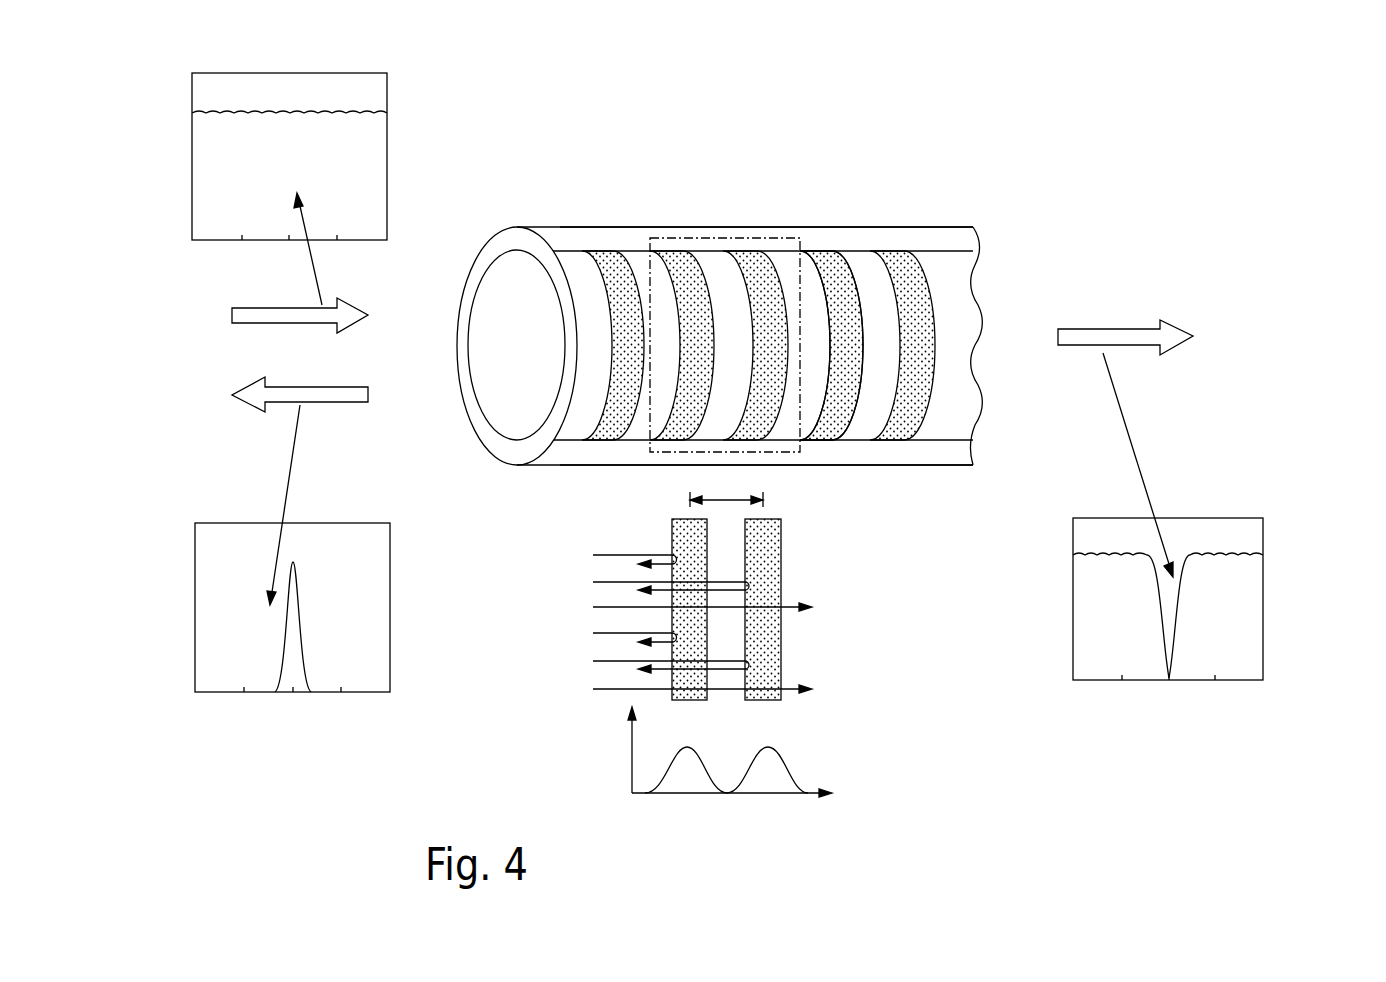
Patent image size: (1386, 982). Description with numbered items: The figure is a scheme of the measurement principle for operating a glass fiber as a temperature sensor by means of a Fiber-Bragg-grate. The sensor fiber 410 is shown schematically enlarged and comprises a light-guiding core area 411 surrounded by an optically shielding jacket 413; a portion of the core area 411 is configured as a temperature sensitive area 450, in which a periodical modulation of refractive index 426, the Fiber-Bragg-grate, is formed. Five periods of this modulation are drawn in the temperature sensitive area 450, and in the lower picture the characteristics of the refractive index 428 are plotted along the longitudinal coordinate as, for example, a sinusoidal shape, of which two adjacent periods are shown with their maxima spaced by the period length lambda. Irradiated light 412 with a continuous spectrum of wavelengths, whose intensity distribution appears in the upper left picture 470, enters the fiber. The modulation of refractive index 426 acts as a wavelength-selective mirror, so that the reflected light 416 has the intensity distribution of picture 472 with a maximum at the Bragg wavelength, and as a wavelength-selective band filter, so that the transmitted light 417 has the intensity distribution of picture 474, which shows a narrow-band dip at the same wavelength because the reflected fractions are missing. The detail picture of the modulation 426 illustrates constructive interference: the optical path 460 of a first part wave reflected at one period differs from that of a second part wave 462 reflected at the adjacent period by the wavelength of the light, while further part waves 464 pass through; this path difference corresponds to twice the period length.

The sensor fiber 410 is at (620, 150).
The light-guiding core area 411 is at (857, 275).
The optically shielding jacket 413 is at (957, 233).
The modulation of refractive index 426 is at (822, 563).
The temperature sensitive area 450 is at (885, 211).
The characteristics of the refractive index 428 is at (834, 762).
The irradiated light 412 is at (251, 318).
The reflected light 416 is at (251, 395).
The transmitted light 417 is at (1169, 336).
The optical path of first part wave 460 is at (593, 555).
The light ray reflected at second grating plane 462 is at (593, 582).
The transmitted light ray 464 is at (593, 607).
The picture of intensity distribution of in-coupled light 470 is at (414, 104).
The picture of intensity distribution of reflected light 472 is at (405, 541).
The picture of intensity distribution of transmitted light 474 is at (1288, 605).